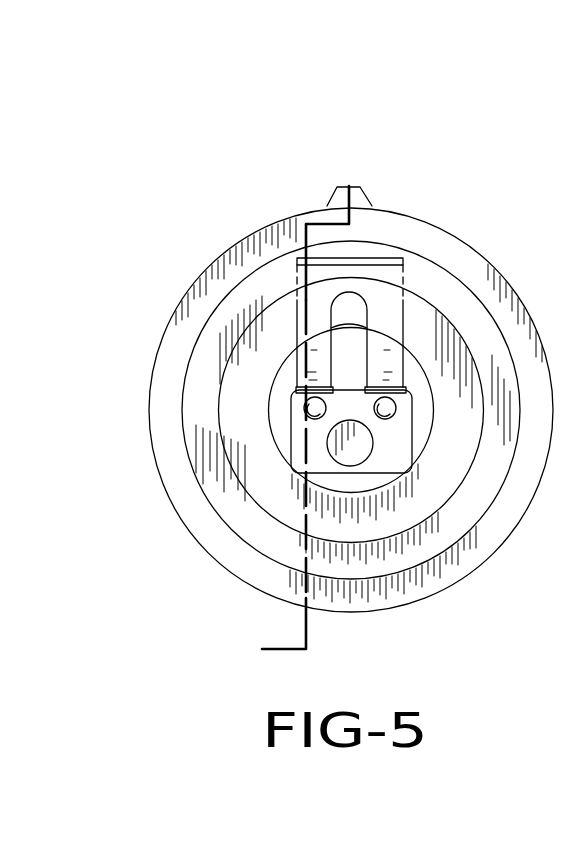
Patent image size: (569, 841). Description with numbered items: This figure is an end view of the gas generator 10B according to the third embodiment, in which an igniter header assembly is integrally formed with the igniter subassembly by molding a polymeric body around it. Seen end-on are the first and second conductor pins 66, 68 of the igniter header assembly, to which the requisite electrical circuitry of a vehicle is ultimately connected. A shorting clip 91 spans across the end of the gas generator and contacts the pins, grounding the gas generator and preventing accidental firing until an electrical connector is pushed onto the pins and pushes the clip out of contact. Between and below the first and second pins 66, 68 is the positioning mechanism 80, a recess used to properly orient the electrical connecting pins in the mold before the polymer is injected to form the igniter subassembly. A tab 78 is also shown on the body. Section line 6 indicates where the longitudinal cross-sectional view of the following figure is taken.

The gas generator 10B is at (198, 186).
The tab 78 is at (366, 190).
The shorting clip 91 is at (316, 307).
The second conductor pin 68 is at (303, 409).
The first conductor pin 66 is at (397, 409).
The positioning mechanism 80 is at (358, 452).
The section line 6— 6 is at (349, 186).